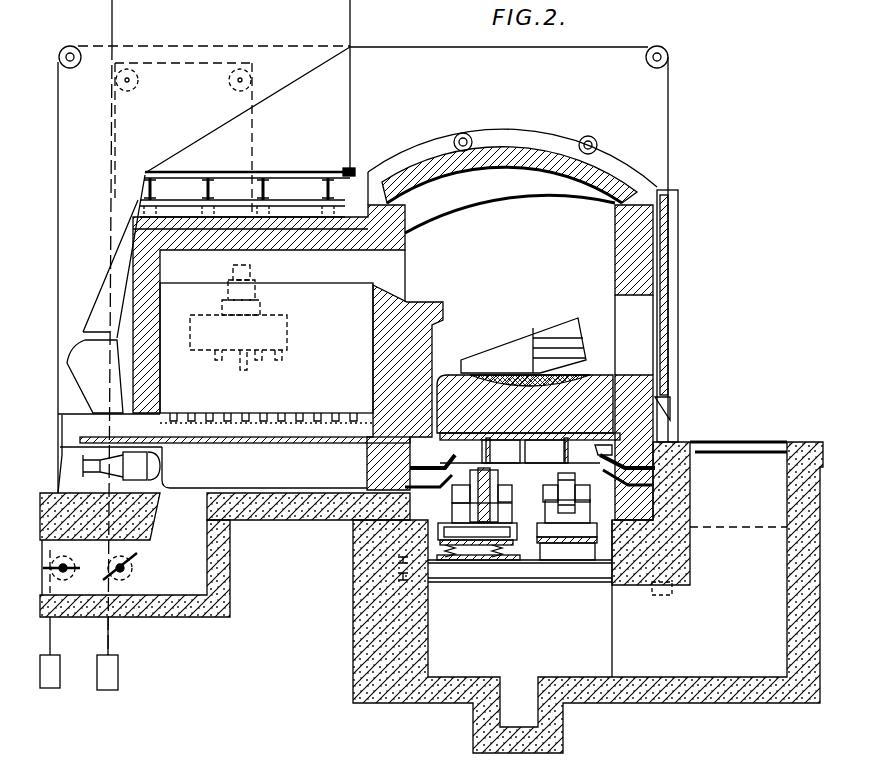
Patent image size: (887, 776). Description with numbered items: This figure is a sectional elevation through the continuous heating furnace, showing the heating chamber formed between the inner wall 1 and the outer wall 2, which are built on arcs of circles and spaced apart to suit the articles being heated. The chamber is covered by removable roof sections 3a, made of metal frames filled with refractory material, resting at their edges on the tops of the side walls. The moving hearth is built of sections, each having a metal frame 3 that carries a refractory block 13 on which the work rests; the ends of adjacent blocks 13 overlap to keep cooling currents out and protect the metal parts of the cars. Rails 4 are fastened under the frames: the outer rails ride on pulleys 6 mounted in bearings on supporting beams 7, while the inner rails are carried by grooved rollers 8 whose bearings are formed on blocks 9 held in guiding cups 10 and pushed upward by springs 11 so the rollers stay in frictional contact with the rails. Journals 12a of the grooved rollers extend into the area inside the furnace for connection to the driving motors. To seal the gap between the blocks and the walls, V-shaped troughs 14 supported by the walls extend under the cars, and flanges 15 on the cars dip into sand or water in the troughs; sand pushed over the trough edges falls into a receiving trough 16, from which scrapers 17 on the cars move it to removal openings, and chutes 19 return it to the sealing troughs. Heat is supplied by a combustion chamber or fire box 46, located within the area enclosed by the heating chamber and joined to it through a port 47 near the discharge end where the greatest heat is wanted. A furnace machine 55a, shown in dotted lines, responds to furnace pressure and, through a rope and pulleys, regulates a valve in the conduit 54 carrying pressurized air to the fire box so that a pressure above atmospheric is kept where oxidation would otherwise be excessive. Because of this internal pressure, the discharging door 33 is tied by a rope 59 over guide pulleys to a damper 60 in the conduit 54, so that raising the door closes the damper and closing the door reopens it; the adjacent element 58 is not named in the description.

The rope 59 is at (622, 47).
The roof sections 3a is at (531, 142).
The port 47 is at (420, 276).
The inner wall 1 is at (158, 320).
The combustion chamber or fire box 46 is at (266, 353).
The outer wall 2 is at (368, 378).
The refractory blocks 13 is at (450, 374).
The discharging door 33 is at (667, 324).
The furnace machine 55a is at (265, 381).
The flanges 15 is at (603, 440).
The V-shaped troughs 14 is at (600, 450).
The scrapers 17 is at (610, 471).
The chutes 19 is at (700, 492).
The auxiliary or receiving trough 16 is at (617, 505).
The metal frame 3 is at (491, 491).
The rails 4 is at (560, 466).
The grooved rollers 8 is at (487, 495).
The pulleys 6 is at (560, 508).
The journals 12a is at (445, 500).
The springs 11 is at (460, 548).
The blocks 9 is at (485, 533).
The guiding cups 10 is at (518, 533).
The supporting beams 7 is at (573, 540).
The switch 58 is at (137, 553).
The damper 60 is at (69, 619).
The conduit 54 is at (135, 555).